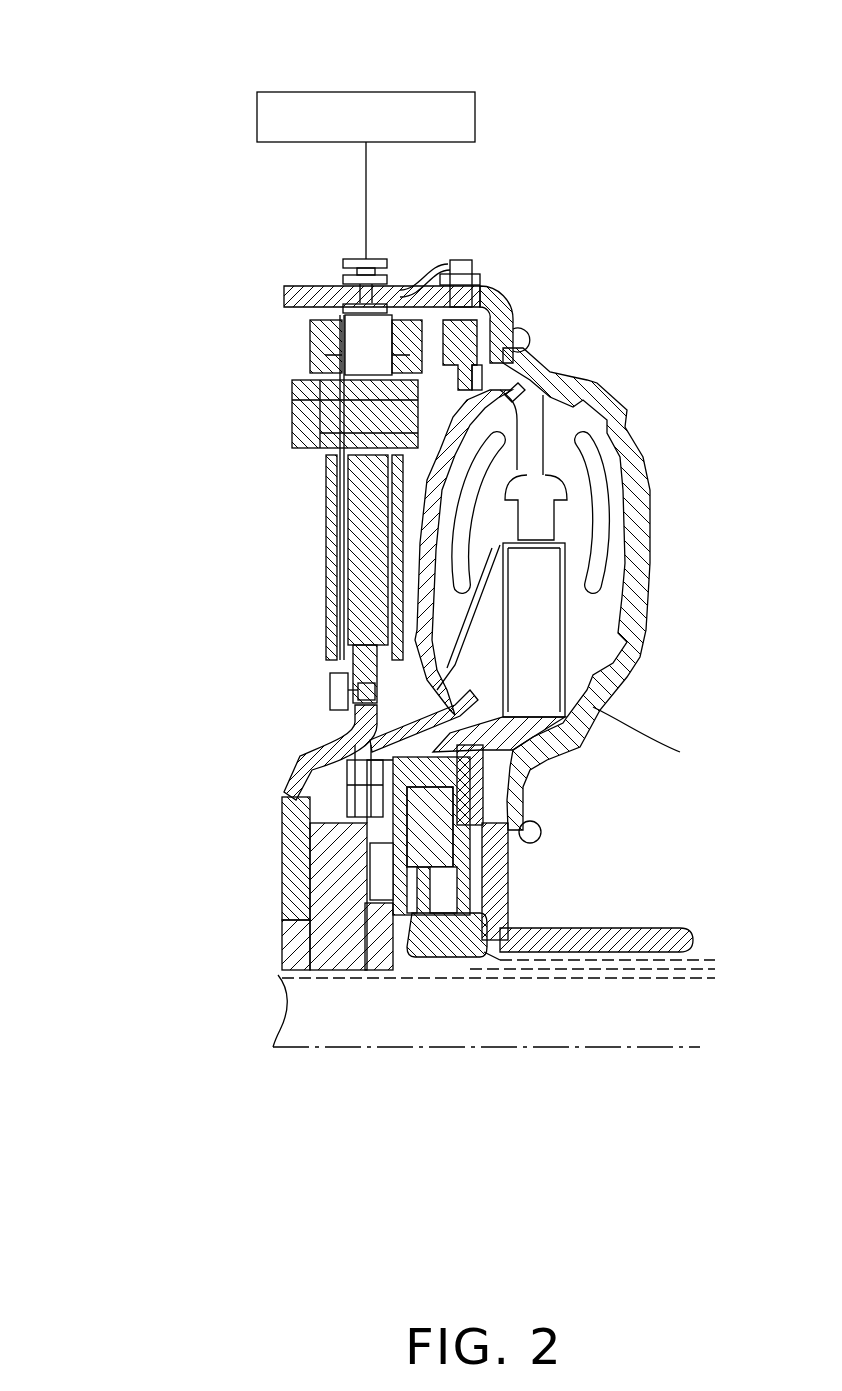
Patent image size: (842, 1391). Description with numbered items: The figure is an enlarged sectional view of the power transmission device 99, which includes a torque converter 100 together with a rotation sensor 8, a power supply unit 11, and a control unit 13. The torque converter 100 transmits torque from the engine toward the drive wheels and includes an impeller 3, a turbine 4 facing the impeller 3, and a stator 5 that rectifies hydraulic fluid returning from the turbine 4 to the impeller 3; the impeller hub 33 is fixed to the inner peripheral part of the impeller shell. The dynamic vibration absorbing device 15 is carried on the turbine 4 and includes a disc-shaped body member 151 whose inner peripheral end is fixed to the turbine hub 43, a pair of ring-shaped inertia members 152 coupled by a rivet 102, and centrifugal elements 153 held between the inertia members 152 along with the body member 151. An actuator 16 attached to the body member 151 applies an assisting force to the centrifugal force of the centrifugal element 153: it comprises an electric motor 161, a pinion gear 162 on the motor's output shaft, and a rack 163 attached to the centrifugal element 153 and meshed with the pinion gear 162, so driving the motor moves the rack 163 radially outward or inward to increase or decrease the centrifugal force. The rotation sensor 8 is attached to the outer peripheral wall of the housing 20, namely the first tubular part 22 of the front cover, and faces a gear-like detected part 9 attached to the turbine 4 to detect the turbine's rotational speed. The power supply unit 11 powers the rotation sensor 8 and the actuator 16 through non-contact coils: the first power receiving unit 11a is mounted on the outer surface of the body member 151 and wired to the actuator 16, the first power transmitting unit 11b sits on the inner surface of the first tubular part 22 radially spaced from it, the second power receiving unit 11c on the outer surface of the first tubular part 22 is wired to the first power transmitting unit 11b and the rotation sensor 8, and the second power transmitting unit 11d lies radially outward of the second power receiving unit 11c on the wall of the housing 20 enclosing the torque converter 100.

The power transmission device 99 is at (141, 167).
The control unit 13 is at (366, 92).
The power supply unit 11 is at (388, 248).
The first power receiving unit 11a is at (360, 318).
The first power transmitting unit 11b is at (343, 310).
The second power receiving unit 11c is at (343, 279).
The second power transmitting unit 11d is at (343, 262).
The first tubular part 22 is at (284, 297).
The rotation sensor 8 is at (460, 262).
The detected part 9 is at (470, 337).
The housing 20 is at (512, 302).
The torque converter 100 is at (590, 338).
The impeller 3 is at (650, 488).
The turbine 4 is at (487, 606).
The stator 5 is at (568, 698).
The dynamic vibration absorbing device 15 is at (272, 453).
The rivet 102 is at (292, 404).
The inertia members 152 is at (326, 528).
The centrifugal elements 153 is at (348, 578).
The rack 163 is at (353, 661).
The actuator 16 is at (314, 689).
The electric motor 161 is at (330, 692).
The pinion gear 162 is at (358, 700).
The body member 151 is at (300, 770).
The turbine hub 43 is at (327, 970).
The impeller hub 33 is at (630, 928).